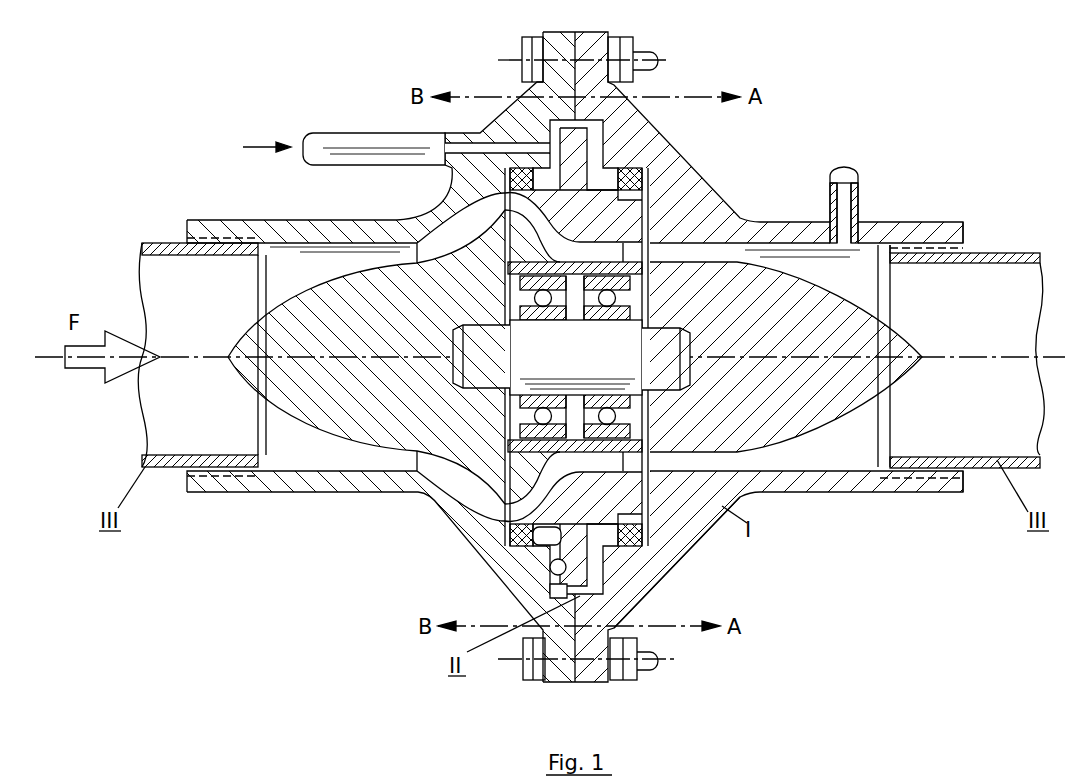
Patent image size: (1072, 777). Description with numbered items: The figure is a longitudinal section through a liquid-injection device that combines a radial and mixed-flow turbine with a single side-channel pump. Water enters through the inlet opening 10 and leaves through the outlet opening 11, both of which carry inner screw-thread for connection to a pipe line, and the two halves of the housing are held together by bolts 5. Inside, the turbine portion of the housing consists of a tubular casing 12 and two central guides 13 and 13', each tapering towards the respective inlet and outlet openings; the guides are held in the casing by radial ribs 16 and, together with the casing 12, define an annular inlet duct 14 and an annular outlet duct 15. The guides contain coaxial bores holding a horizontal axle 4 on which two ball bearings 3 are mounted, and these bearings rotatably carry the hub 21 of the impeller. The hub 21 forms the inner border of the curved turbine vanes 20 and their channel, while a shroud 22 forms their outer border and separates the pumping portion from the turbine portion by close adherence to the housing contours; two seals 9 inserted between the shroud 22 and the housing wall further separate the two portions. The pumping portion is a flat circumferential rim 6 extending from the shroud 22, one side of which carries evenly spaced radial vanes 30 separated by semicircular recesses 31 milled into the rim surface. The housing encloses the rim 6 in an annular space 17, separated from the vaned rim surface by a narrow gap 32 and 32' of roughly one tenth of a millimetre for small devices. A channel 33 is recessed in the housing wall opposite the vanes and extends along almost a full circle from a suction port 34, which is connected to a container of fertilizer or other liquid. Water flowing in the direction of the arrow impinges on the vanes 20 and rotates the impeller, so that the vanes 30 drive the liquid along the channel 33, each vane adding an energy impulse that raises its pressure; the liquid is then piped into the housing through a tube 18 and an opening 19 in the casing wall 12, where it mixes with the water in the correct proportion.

The ball bearings 3 is at (750, 497).
The horizontal axle 4 is at (667, 368).
The bolts 5 is at (641, 55).
The circumferential rim 6 is at (580, 170).
The seal 9 is at (505, 178).
The inlet opening 10 is at (190, 490).
The outlet opening 11 is at (965, 492).
The tubular casing 12 is at (282, 235).
The central guide 13 is at (362, 383).
The central guide 13' is at (925, 406).
The annular inlet duct 14 is at (343, 267).
The annular outlet duct 15 is at (852, 448).
The radial ribs 16 is at (695, 255).
The annular space 17 is at (593, 135).
The tube 18 is at (847, 177).
The opening 19 is at (843, 230).
The turbine vanes 20 is at (590, 253).
The hub 21 is at (520, 253).
The shroud 22 is at (682, 515).
The radial vanes 30 is at (557, 148).
The semicircular recesses 31 is at (496, 130).
The narrow gap 32 is at (508, 598).
The narrow gap 32' is at (486, 551).
The channel 33 is at (549, 568).
The suction port 34 is at (457, 148).